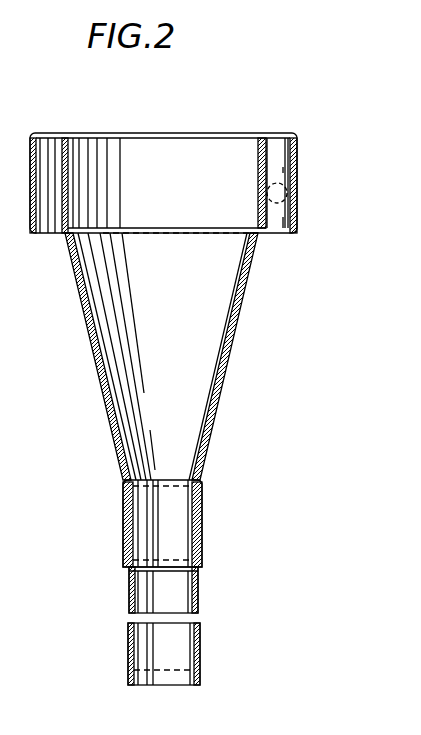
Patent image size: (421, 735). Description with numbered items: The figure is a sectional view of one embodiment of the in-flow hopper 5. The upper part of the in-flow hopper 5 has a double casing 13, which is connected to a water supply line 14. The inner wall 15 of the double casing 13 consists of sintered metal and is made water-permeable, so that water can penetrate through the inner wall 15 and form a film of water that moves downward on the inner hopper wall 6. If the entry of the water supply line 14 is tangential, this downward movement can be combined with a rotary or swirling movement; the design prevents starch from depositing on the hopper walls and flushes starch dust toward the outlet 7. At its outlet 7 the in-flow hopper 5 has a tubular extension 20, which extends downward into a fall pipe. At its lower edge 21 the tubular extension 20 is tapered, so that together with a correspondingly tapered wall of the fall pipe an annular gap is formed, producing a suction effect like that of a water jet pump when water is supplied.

The in-flow hopper 5 is at (82, 343).
The inner hopper wall 6 is at (240, 326).
The outlet 7 is at (183, 530).
The double casing 13 is at (281, 133).
The water supply line 14 is at (298, 165).
The inner wall 15 is at (260, 165).
The tubular extension 20 is at (197, 598).
The lower edge 21 is at (200, 682).